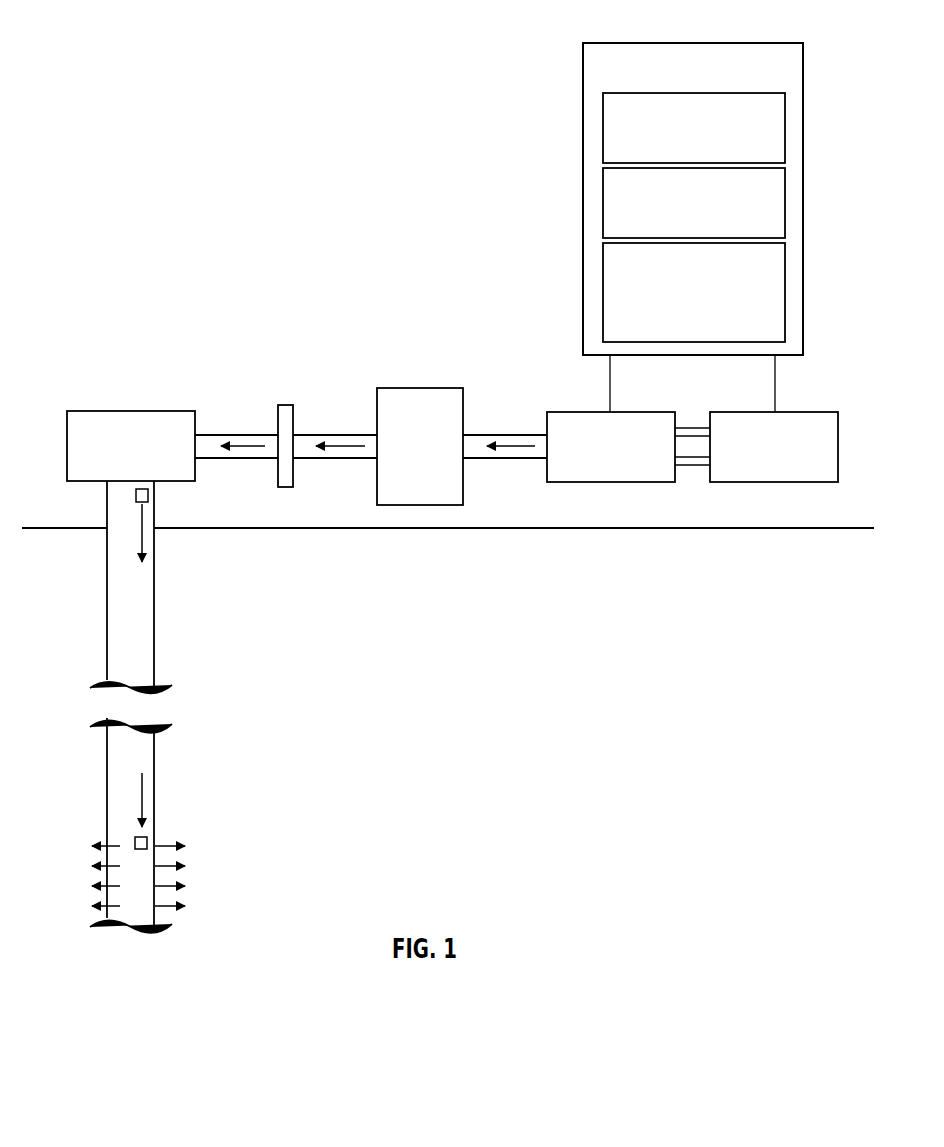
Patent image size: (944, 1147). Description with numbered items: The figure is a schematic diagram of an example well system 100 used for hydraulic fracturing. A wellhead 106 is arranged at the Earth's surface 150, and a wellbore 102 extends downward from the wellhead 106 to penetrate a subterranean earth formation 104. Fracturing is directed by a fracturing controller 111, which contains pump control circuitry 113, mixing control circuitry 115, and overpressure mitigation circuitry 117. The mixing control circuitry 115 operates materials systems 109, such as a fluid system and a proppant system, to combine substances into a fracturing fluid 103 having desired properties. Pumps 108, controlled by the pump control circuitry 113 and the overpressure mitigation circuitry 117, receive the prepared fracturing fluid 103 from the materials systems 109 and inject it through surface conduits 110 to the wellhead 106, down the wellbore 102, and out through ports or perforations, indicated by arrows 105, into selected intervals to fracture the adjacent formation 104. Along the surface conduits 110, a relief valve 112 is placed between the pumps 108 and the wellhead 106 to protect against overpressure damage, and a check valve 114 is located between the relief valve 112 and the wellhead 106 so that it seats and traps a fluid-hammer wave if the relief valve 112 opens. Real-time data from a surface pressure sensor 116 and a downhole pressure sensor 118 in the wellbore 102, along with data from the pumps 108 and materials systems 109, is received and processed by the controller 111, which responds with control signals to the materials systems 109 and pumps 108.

The well system 100 is at (258, 128).
The wellbore 102 is at (155, 590).
The fracturing fluid 103 is at (528, 455).
The subterranean earth formation 104 is at (601, 571).
The arrows indicating ports or perforations 105 is at (103, 846).
The wellhead 106 is at (130, 411).
The pumps 108 is at (648, 412).
The materials systems 109 is at (812, 412).
The surface conduits 110 is at (238, 435).
The fracturing controller 111 is at (611, 43).
The relief valve 112 is at (420, 388).
The pump control circuitry 113 is at (603, 129).
The check valve 114 is at (287, 405).
The mixing control circuitry 115 is at (603, 204).
The surface pressure sensor 116 is at (136, 496).
The overpressure mitigation circuitry 117 is at (603, 292).
The downhole pressure sensor 118 is at (148, 843).
The Earth's surface 150 is at (197, 528).